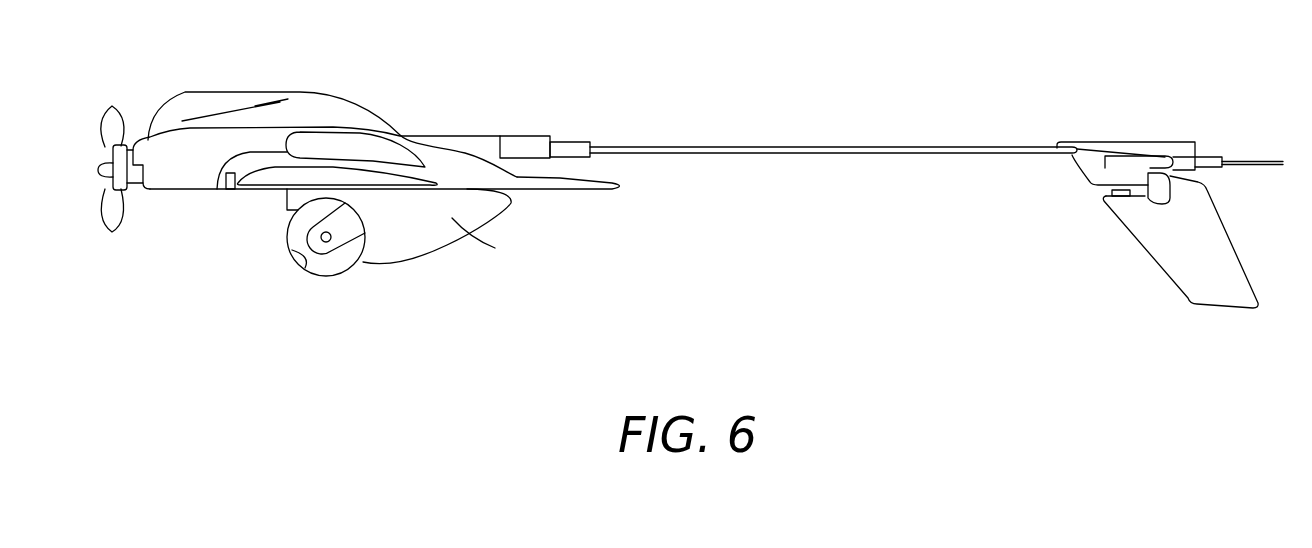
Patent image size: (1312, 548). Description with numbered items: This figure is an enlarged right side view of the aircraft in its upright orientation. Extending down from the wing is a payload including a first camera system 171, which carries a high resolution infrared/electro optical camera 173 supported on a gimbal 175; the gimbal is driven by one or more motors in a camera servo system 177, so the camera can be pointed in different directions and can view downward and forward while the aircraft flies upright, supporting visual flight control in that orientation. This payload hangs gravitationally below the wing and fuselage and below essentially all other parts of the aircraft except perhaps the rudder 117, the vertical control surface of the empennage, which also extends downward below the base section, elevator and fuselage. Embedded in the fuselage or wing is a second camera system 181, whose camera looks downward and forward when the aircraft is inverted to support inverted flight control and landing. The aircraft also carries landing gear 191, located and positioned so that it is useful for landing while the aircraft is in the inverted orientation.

The landing gear 191 is at (232, 101).
The second camera system 181 is at (367, 148).
The camera servo system 177 is at (495, 248).
The first camera system 171 is at (423, 257).
The gimbal 175 is at (342, 238).
The infrared/electro optical camera 173 is at (295, 262).
The rudder 117 is at (1218, 302).